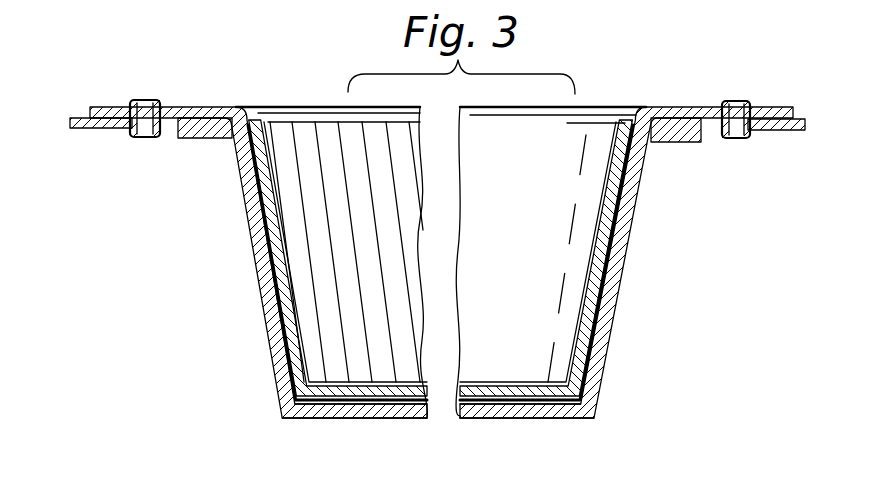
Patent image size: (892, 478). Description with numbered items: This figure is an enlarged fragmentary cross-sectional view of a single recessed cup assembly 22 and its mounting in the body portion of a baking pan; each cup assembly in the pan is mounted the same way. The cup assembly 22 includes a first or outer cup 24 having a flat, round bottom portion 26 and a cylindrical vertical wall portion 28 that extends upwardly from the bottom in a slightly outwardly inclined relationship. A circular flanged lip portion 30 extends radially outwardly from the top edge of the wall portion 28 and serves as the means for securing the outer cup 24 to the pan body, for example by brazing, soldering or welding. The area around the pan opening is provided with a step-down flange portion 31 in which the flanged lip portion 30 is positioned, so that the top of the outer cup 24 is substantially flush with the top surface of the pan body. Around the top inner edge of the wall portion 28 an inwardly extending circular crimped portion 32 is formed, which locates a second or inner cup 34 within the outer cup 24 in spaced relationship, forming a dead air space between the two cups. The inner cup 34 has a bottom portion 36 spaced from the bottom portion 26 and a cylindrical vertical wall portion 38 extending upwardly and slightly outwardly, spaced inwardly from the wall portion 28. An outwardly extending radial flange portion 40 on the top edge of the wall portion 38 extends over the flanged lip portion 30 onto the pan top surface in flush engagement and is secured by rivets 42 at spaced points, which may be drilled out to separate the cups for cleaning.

The cup assembly 22 is at (630, 250).
The first or outer cup 24 is at (246, 238).
The bottom portion 26 is at (286, 419).
The cylindrical vertical wall portion 28 is at (266, 328).
The flanged lip portion 30 is at (200, 106).
The step-down flange portion 31 is at (205, 139).
The crimped portion 32 is at (648, 146).
The second or inner cup 34 is at (316, 368).
The bottom portion 36 is at (543, 404).
The cylindrical vertical wall portion 38 is at (583, 367).
The radial flange portion 40 is at (90, 107).
The rivets 42 is at (143, 100).